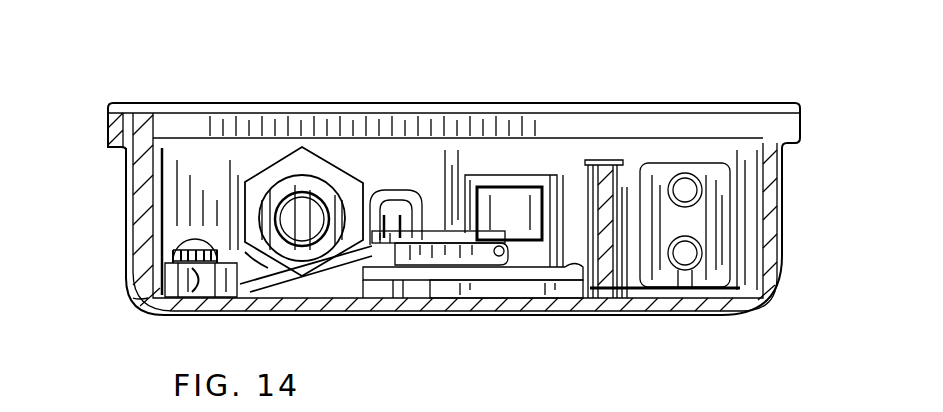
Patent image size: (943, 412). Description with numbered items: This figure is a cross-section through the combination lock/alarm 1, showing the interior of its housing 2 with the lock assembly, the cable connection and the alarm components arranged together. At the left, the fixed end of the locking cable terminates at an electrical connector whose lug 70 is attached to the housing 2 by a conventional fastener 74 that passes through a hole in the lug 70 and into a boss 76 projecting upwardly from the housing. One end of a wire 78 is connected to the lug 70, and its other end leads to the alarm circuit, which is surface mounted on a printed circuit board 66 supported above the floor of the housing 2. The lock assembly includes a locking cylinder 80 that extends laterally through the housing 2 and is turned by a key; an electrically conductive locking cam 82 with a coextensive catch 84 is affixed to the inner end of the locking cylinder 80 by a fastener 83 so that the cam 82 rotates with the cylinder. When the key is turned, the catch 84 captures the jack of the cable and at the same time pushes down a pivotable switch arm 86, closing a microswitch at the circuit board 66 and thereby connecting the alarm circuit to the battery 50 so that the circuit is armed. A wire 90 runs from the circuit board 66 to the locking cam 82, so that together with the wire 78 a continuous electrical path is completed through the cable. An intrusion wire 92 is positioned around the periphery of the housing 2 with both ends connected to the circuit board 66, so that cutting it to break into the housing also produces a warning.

The combination lock/alarm 1 is at (809, 181).
The housing 2 is at (737, 307).
The battery 50 is at (697, 223).
The printed circuit board 66 is at (400, 300).
The lug 70 is at (131, 293).
The fastener 74 is at (178, 233).
The boss 76 is at (133, 298).
The wire 78 is at (176, 314).
The locking cylinder 80 is at (303, 172).
The locking cam 82 is at (373, 185).
The fastener 83 is at (330, 262).
The catch 84 is at (440, 222).
The switch arm 86 is at (437, 232).
The wire 90 is at (250, 253).
The intrusion wire 92 is at (643, 310).